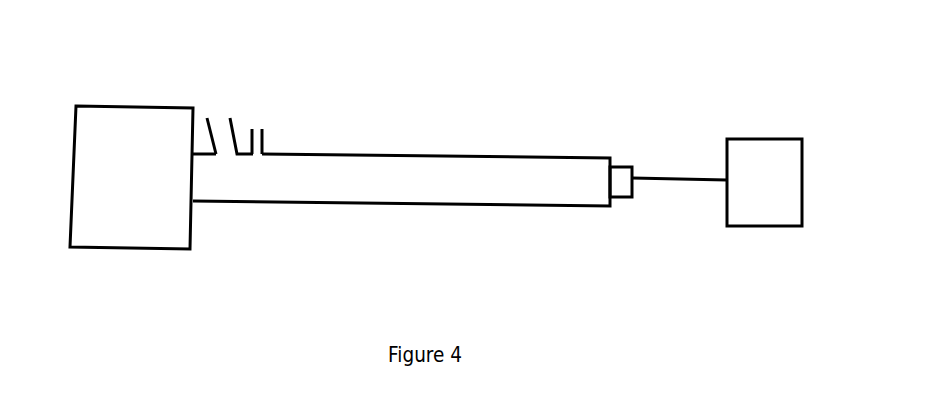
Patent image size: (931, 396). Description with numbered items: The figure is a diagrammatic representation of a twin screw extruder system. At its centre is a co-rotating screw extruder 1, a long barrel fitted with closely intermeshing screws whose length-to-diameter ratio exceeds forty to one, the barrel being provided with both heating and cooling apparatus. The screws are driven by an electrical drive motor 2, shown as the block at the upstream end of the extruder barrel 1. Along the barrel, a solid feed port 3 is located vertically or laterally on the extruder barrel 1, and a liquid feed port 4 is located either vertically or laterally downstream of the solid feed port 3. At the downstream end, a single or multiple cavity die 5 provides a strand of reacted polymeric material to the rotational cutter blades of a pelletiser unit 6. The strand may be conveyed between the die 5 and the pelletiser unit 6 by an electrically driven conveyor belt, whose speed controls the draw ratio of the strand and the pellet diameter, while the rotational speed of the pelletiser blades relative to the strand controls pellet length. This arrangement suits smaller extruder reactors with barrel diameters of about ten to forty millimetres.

The co-rotating screw extruder 1 is at (401, 180).
The electrical drive motor 2 is at (131, 177).
The solid feed port 3 is at (217, 98).
The liquid feed port 4 is at (282, 103).
The single or multiple cavity die 5 is at (657, 140).
The pelletiser unit 6 is at (764, 182).